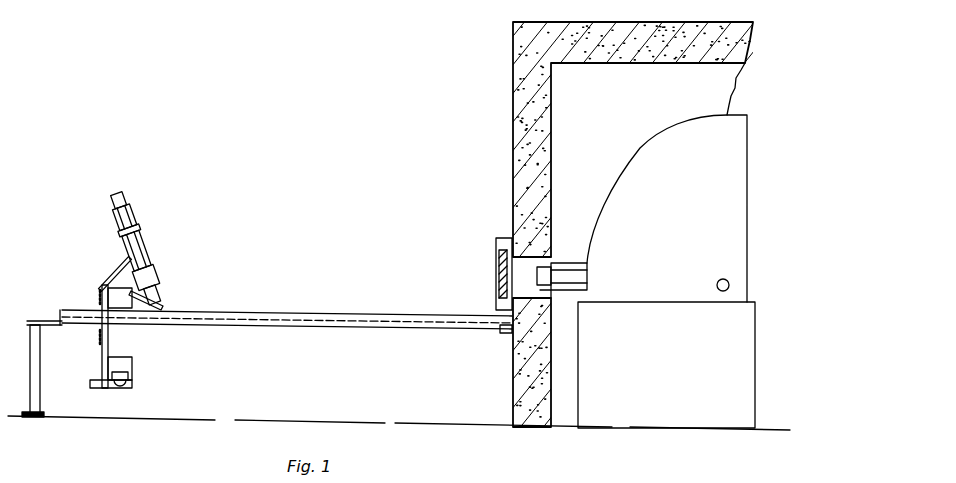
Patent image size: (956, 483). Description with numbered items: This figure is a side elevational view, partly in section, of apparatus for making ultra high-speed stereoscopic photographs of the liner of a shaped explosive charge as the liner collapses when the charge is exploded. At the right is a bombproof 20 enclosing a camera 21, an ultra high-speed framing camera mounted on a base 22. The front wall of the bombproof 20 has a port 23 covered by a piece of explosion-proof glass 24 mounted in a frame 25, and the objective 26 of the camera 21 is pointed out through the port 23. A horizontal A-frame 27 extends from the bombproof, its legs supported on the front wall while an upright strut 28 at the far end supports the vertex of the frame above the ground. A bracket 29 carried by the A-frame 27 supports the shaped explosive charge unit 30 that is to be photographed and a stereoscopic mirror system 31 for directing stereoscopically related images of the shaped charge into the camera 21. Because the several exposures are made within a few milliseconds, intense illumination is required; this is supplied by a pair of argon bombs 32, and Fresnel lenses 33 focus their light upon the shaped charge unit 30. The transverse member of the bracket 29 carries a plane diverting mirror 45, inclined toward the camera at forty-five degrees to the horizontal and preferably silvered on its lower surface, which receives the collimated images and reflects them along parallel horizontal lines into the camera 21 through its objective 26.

The bombproof 20 is at (526, 132).
The camera 21 is at (642, 151).
The base 22 is at (739, 381).
The port 23 is at (550, 259).
The explosion-proof glass 24 is at (496, 263).
The frame 25 is at (505, 238).
The objective 26 is at (548, 288).
The A-frame 27 is at (379, 313).
The upright strut 28 is at (40, 391).
The bracket 29 is at (101, 346).
The shaped explosive charge unit 30 is at (132, 380).
The stereoscopic mirror system 31 is at (115, 267).
The argon bombs 32 is at (161, 239).
The Fresnel lenses 33 is at (162, 305).
The plane diverting mirror 45 is at (106, 284).